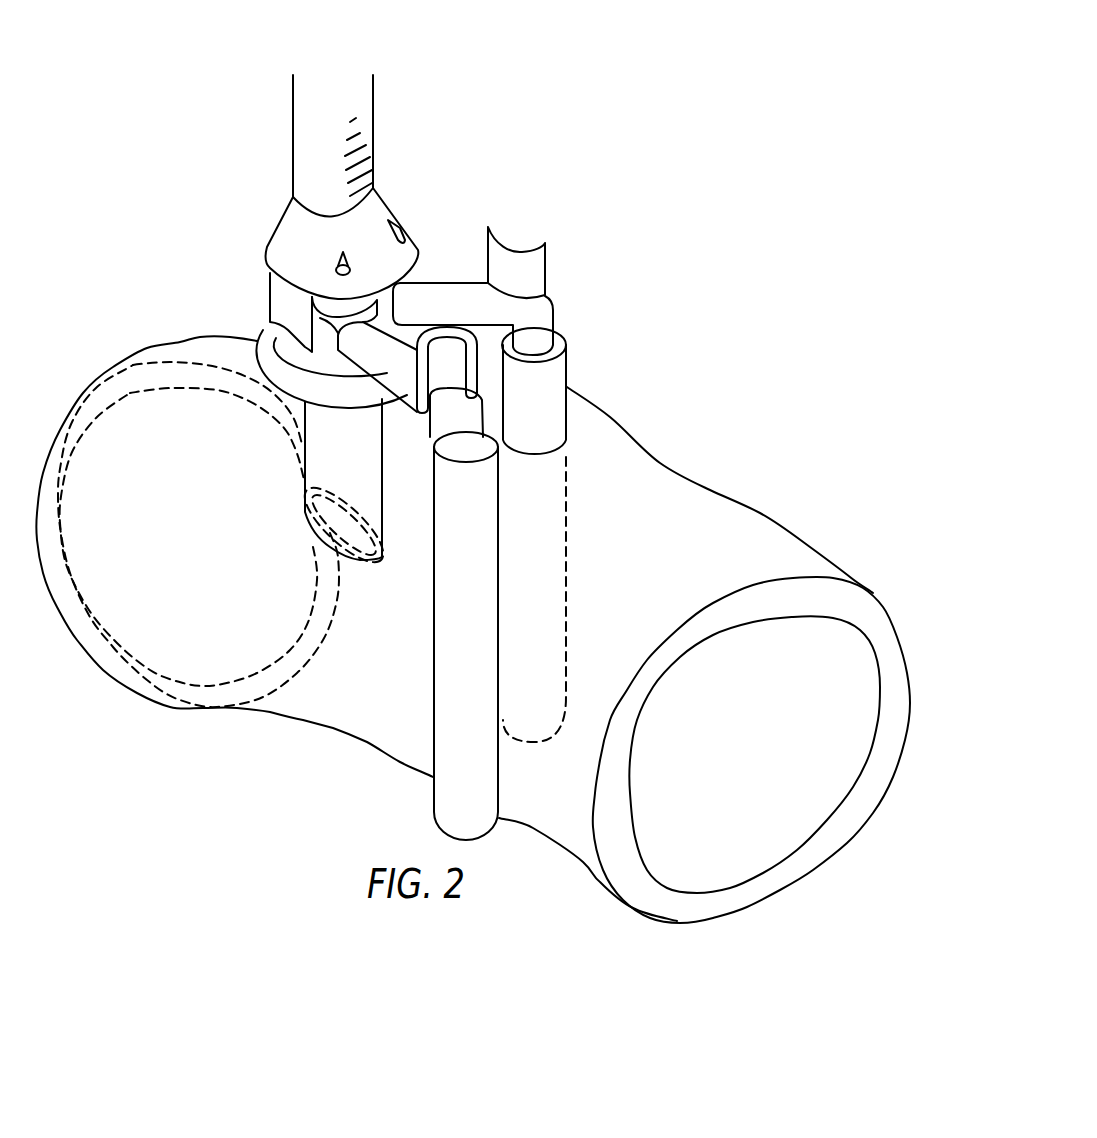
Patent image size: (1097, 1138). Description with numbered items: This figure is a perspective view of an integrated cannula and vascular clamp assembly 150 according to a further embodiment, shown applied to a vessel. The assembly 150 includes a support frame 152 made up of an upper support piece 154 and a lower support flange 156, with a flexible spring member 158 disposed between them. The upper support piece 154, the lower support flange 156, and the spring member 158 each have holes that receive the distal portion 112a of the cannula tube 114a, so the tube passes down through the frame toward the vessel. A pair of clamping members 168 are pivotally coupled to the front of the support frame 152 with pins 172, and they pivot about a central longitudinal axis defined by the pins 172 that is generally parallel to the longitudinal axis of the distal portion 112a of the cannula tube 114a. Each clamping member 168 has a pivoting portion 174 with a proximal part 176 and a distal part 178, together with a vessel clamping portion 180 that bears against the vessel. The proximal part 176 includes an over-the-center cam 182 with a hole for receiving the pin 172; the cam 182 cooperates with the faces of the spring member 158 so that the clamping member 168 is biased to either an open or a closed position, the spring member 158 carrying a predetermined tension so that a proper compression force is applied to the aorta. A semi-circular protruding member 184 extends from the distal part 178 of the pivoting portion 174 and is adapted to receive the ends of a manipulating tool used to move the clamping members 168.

The distal portion 112a is at (303, 457).
The cannula tube 114a is at (352, 95).
The integrated cannula and vascular clamp assembly 150 is at (459, 196).
The support frame 152 is at (282, 210).
The upper support piece 154 is at (267, 248).
The lower support flange 156 is at (262, 330).
The flexible spring member 158 is at (270, 290).
The clamping members 168 is at (557, 330).
The pins 172 is at (395, 222).
The pivoting portion 174 is at (468, 281).
The proximal part 176 is at (421, 283).
The distal part 178 is at (545, 298).
The vessel clamping portion 180 is at (567, 525).
The over-the-center cam 182 is at (320, 362).
The semi-circular protruding member 184 is at (518, 250).